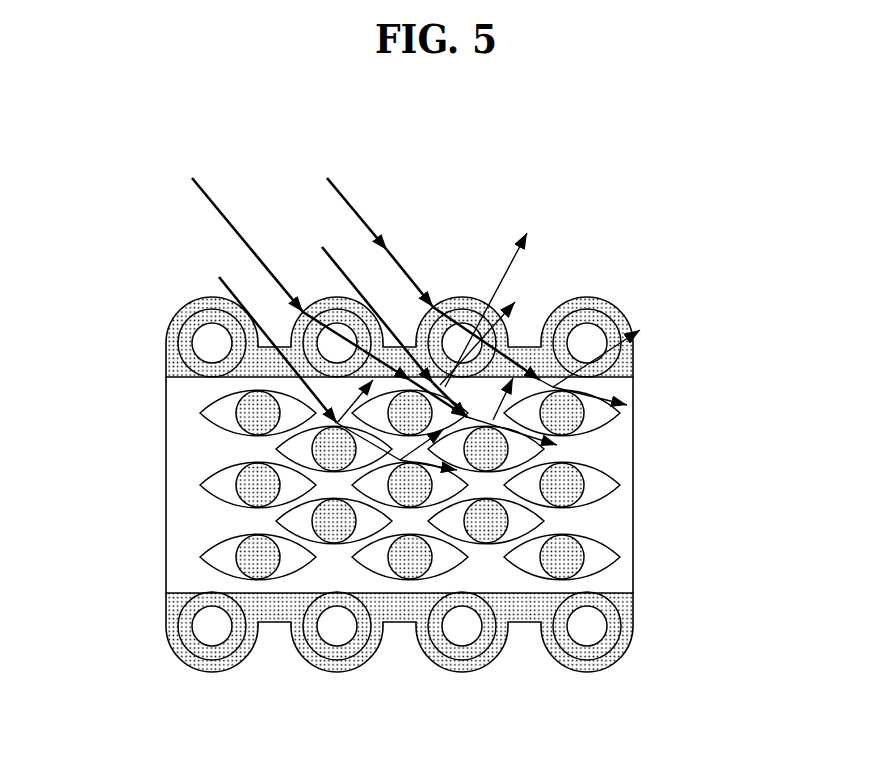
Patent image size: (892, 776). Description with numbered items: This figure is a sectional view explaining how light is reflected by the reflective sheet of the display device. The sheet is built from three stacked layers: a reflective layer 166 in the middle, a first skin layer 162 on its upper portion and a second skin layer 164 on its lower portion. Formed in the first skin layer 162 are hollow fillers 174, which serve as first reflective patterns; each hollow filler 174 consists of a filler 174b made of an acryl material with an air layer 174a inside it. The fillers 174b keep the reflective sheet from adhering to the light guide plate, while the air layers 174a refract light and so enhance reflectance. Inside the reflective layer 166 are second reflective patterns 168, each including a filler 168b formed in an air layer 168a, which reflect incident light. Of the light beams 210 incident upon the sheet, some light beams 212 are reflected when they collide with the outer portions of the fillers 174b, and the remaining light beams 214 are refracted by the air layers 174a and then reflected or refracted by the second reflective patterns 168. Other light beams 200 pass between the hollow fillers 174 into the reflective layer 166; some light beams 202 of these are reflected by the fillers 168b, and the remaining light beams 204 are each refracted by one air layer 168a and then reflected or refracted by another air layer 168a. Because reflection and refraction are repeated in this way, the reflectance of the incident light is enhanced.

The first skin layer 162 is at (607, 302).
The second skin layer 164 is at (610, 666).
The reflective layer 166 is at (622, 455).
The second reflective patterns 168 is at (505, 485).
The air layer 168a is at (595, 546).
The filler 168b is at (585, 556).
The hollow fillers 174 is at (494, 483).
The air layer 174a is at (593, 347).
The filler 174b is at (610, 320).
The light beams 200 is at (300, 345).
The light beams 202 is at (320, 385).
The light beams 204 is at (345, 446).
The light beams 210 is at (217, 202).
The light beams 212 is at (366, 276).
The light beams 214 is at (300, 345).